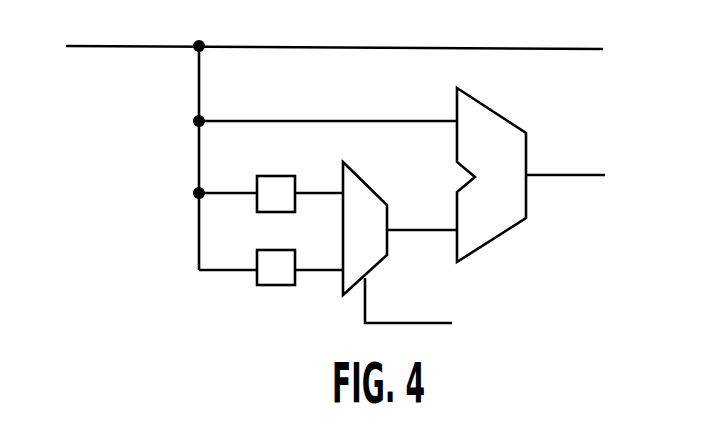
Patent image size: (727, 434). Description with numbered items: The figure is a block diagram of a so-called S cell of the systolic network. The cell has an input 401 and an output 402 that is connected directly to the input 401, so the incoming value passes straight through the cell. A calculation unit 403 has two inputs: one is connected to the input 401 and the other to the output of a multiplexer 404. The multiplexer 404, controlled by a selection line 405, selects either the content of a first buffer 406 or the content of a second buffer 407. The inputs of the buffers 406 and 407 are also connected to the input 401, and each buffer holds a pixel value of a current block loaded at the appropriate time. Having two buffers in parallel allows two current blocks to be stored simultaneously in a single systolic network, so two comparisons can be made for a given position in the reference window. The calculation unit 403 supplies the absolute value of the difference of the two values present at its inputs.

The input 401 is at (127, 48).
The output 402 is at (520, 49).
The calculation unit 403 is at (493, 108).
The multiplexer 404 is at (360, 175).
The selection line 405 is at (415, 323).
The buffer 406 is at (275, 176).
The buffer 407 is at (272, 285).